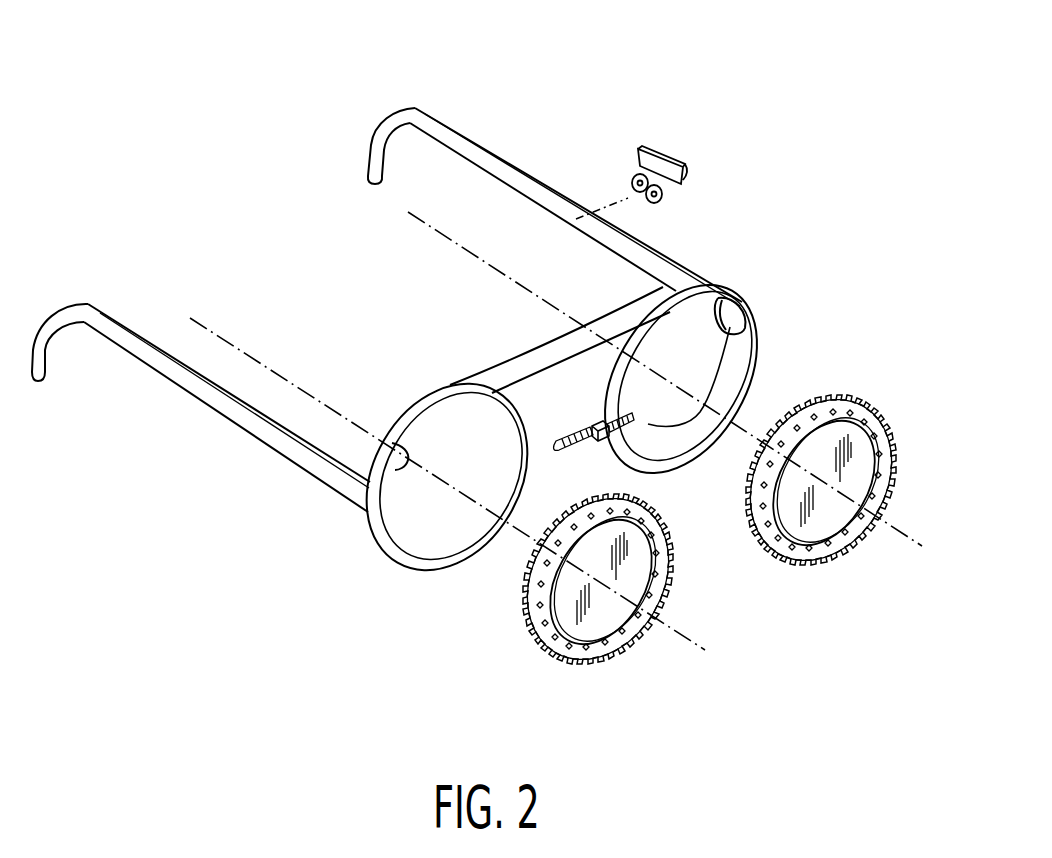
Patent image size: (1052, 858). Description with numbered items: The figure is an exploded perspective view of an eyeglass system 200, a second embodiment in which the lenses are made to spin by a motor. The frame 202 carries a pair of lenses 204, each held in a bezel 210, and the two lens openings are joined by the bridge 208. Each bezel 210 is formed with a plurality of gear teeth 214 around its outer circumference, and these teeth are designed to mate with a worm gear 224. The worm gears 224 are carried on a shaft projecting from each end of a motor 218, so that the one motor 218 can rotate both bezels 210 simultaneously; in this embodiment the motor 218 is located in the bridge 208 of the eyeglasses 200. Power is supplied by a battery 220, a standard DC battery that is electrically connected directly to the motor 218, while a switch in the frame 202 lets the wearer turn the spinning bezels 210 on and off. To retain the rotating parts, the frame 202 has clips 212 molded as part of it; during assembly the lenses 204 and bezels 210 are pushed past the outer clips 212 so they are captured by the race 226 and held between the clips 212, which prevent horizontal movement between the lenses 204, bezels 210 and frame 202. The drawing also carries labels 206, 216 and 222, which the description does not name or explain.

The eyeglass system 200 is at (138, 87).
The frame 202 is at (563, 462).
The lenses 204 is at (603, 622).
The temple 206 is at (140, 348).
The bridge 208 is at (560, 380).
The bezels 210 is at (680, 537).
The clips 212 is at (390, 442).
The gear teeth 214 is at (860, 542).
The serrated edge 216 is at (524, 598).
The motor 218 is at (588, 440).
The battery 220 is at (668, 204).
The mounting plate 222 is at (641, 146).
The worm gear 224 is at (722, 378).
The race 226 is at (433, 573).